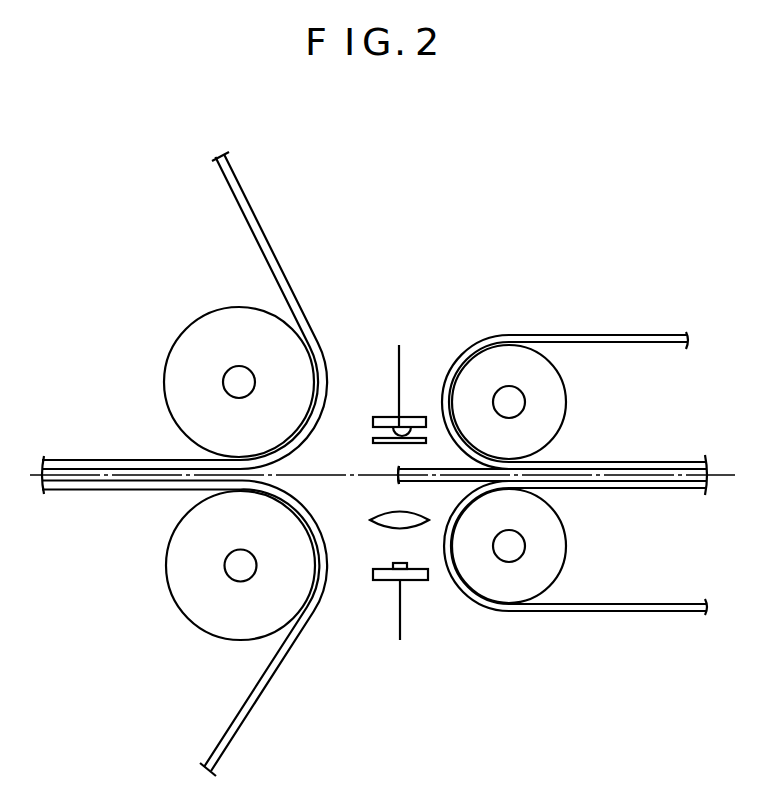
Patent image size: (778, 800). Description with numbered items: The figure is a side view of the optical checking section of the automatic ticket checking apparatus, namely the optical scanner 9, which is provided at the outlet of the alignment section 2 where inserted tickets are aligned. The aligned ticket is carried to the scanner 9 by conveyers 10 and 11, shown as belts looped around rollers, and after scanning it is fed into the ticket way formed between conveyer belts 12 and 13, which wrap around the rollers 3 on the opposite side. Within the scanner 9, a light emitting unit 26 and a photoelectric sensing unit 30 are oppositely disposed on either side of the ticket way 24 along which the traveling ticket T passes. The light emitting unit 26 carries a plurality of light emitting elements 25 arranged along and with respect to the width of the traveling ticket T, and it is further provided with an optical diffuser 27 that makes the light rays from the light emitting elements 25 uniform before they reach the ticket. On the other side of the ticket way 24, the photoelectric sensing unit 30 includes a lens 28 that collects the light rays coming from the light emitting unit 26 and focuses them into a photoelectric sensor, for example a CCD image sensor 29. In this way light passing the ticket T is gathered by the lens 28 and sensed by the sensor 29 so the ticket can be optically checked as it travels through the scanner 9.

The alignment section 2 is at (574, 455).
The guide rollers 3 is at (112, 417).
The optical scanner 9 is at (382, 358).
The conveyer 10 is at (590, 335).
The conveyer 11 is at (597, 612).
The conveyer belt 12 is at (240, 168).
The conveyer belt 13 is at (228, 741).
The ticket way 24 is at (333, 473).
The light emitting elements 25 is at (410, 416).
The light emitting unit 26 is at (378, 416).
The optical diffuser 27 is at (393, 444).
The lens 28 is at (380, 516).
The CCD image sensor 29 is at (401, 563).
The photoelectric sensing unit 30 is at (414, 582).
The traveling ticket T is at (440, 466).